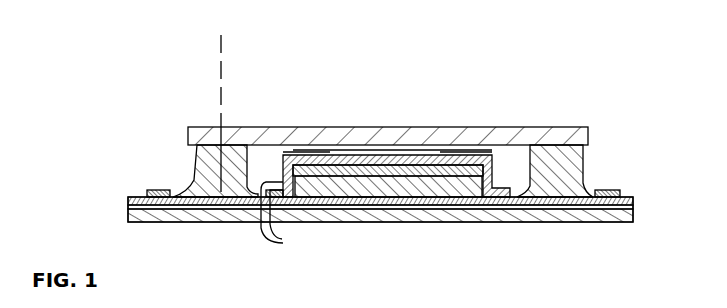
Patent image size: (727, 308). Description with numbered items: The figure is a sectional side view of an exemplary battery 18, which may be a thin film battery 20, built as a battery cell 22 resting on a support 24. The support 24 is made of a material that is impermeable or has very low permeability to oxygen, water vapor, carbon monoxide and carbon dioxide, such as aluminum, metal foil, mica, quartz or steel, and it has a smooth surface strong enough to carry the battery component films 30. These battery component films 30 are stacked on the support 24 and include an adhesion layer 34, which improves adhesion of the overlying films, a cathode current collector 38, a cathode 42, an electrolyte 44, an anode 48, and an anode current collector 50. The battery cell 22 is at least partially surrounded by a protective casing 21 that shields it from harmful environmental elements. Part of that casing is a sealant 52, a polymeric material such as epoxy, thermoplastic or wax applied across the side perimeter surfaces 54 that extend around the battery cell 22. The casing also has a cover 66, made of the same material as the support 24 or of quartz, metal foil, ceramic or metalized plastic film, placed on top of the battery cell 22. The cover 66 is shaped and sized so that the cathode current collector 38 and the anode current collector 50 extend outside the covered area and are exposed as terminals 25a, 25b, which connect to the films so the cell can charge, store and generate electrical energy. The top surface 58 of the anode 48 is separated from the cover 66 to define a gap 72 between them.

The battery 18 is at (400, 67).
The thin film battery 20 is at (552, 66).
The protective casing 21 is at (195, 92).
The battery cell 22 is at (387, 150).
The support 24 is at (382, 222).
The terminal 25a is at (158, 183).
The terminal 25b is at (608, 188).
The battery component films 30 is at (287, 219).
The adhesion layer 34 is at (635, 207).
The cathode current collector 38 is at (630, 200).
The cathode 42 is at (388, 186).
The electrolyte 44 is at (462, 157).
The anode 48 is at (358, 157).
The anode current collector 50 is at (130, 200).
The sealant 52 is at (192, 165).
The side perimeter surfaces 54 is at (223, 78).
The top surface 58 is at (345, 150).
The cover 66 is at (307, 127).
The gap 72 is at (313, 150).